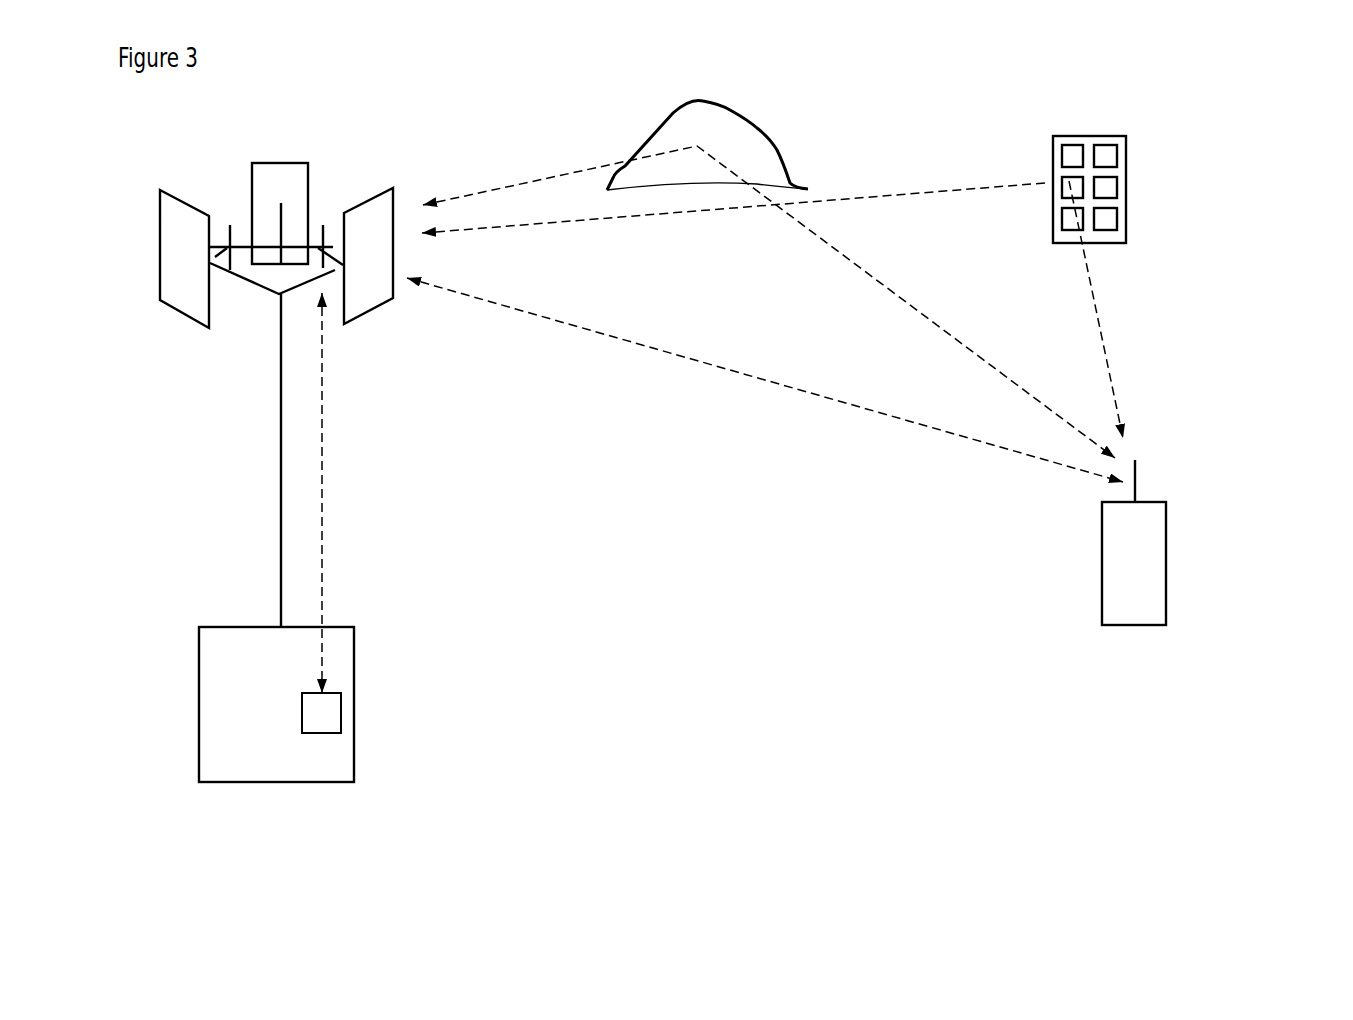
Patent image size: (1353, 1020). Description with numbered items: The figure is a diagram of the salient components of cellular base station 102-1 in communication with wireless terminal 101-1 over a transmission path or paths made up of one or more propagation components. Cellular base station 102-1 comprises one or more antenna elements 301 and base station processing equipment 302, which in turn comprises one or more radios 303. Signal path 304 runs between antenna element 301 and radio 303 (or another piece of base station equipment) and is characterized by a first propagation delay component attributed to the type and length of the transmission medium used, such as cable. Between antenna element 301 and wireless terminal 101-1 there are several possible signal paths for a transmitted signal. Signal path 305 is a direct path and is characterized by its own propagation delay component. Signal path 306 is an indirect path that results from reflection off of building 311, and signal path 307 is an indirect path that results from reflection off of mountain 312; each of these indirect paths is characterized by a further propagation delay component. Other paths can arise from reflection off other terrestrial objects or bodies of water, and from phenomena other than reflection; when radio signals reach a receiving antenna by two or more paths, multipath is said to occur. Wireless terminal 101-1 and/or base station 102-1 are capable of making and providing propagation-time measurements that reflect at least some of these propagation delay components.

The cellular base station 102-1 is at (315, 366).
The antenna element 301 is at (407, 247).
The base station processing equipment 302 is at (247, 682).
The radio 303 is at (361, 707).
The signal path 304 is at (359, 493).
The signal path 305 is at (765, 380).
The signal path 306 is at (1121, 309).
The signal path 307 is at (769, 302).
The building 311 is at (811, 183).
The mountain 312 is at (726, 146).
The wireless terminal 101-1 is at (1203, 521).